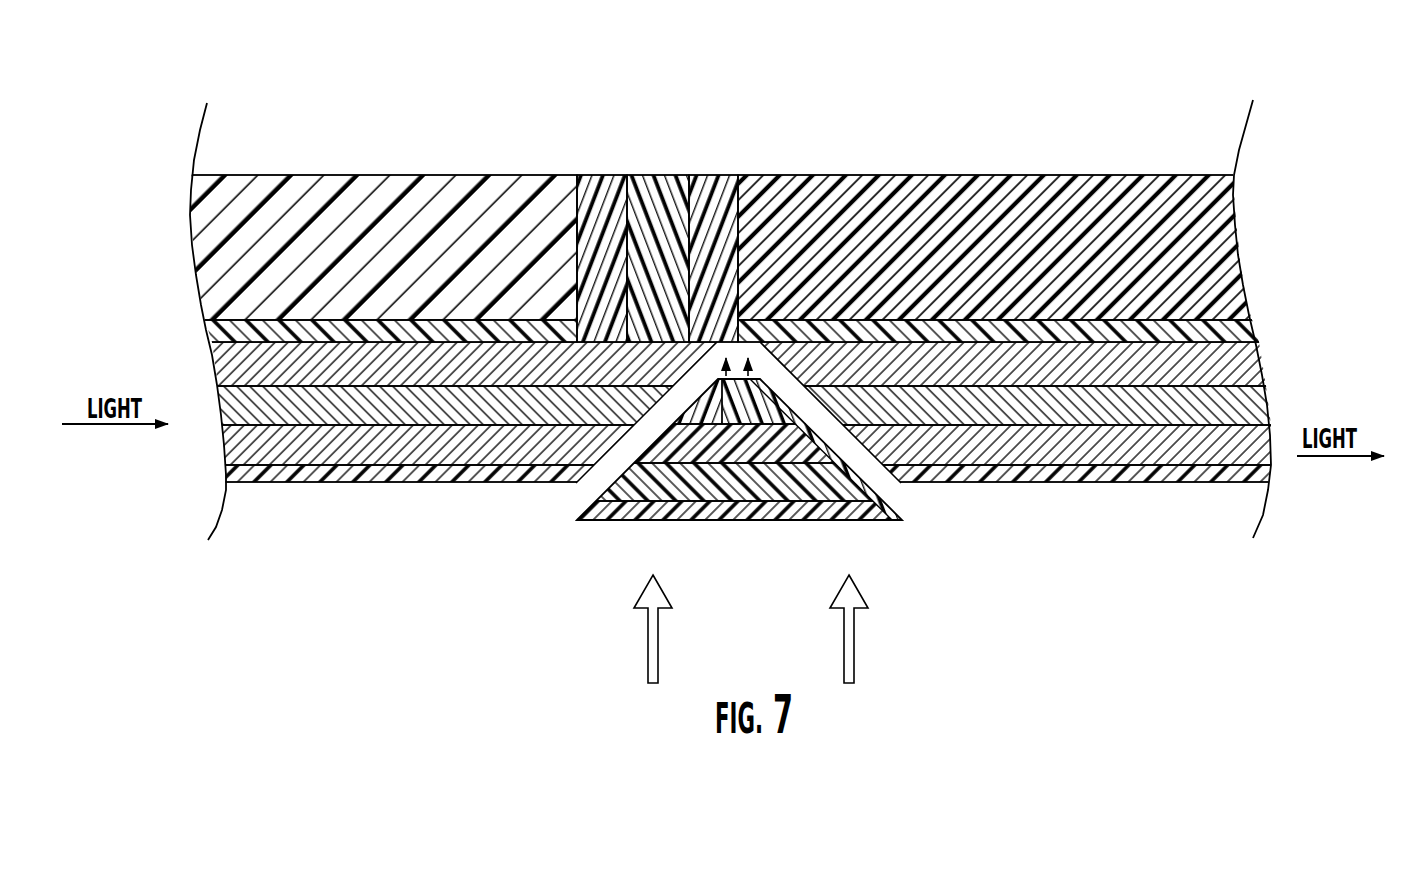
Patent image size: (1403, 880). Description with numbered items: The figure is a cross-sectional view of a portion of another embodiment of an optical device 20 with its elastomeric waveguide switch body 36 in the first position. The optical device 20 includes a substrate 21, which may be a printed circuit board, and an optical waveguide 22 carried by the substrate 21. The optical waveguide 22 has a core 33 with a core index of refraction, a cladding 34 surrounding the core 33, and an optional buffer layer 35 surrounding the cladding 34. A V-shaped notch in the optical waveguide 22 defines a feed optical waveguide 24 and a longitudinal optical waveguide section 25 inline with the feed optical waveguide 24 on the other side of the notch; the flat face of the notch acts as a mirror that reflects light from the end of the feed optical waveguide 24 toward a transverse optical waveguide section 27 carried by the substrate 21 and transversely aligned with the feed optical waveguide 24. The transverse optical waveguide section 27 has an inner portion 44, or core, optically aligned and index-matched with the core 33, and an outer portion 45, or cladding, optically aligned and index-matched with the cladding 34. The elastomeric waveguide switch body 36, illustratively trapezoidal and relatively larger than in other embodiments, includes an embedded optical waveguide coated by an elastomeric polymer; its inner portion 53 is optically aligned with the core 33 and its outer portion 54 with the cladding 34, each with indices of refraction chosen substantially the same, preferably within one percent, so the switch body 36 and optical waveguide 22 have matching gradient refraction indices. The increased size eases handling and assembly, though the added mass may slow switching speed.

The optical device 20 is at (542, 107).
The substrate 21 is at (368, 192).
The optical waveguide 22 is at (728, 449).
The feed optical waveguide 24 is at (347, 483).
The longitudinal optical waveguide section 25 is at (1023, 482).
The transverse optical waveguide section 27 is at (721, 209).
The core 33 is at (1250, 402).
The cladding 34 is at (1250, 363).
The buffer layer 35 is at (1243, 329).
The elastomeric waveguide switch body 36 is at (739, 482).
The transverse optical waveguide section inner portion 44 is at (642, 190).
The transverse optical waveguide section outer portion 45 is at (595, 188).
The inner portion 53 is at (787, 437).
The outer portion 54 is at (722, 390).